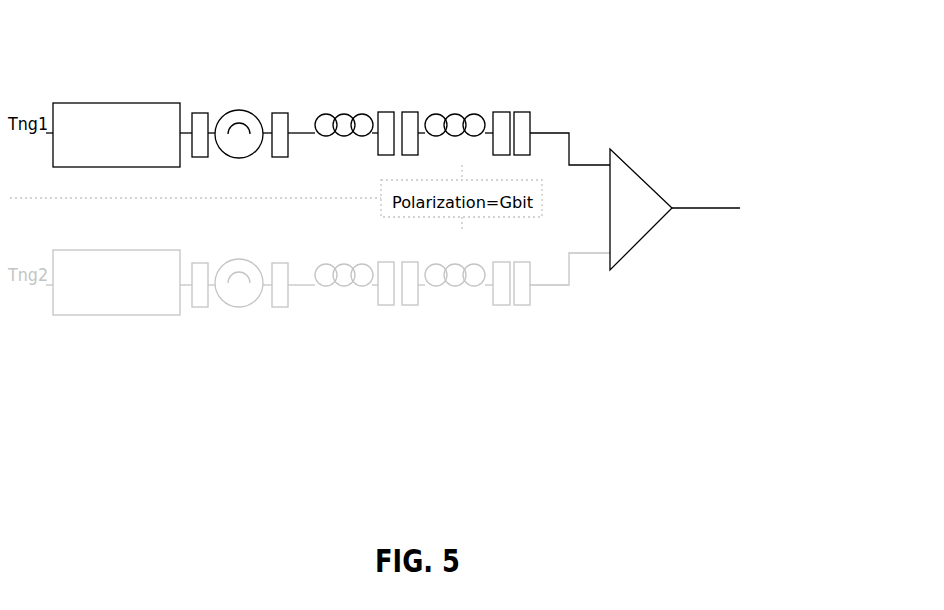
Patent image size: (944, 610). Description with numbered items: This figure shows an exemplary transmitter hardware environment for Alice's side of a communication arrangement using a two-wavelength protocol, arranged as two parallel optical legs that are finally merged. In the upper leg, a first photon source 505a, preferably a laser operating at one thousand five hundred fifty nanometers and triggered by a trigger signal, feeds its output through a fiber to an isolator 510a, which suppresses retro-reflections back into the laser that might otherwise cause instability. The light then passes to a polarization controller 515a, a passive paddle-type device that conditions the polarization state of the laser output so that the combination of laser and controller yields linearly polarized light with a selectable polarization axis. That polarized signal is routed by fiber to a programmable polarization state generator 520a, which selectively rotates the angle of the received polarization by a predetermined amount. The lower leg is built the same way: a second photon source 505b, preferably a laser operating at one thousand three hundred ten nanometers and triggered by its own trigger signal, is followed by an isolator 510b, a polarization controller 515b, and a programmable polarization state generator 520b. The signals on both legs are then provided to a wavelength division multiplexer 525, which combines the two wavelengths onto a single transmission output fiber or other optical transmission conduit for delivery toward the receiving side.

The first photon source 505a is at (116, 104).
The isolator 510a is at (240, 101).
The polarization controller 515a is at (366, 98).
The programmable polarization state generator 520a is at (477, 98).
The second photon source 505b is at (116, 311).
The isolator 510b is at (240, 308).
The polarization controller 515b is at (366, 305).
The programmable polarization state generator 520b is at (477, 300).
The wavelength division multiplexer 525 is at (748, 186).